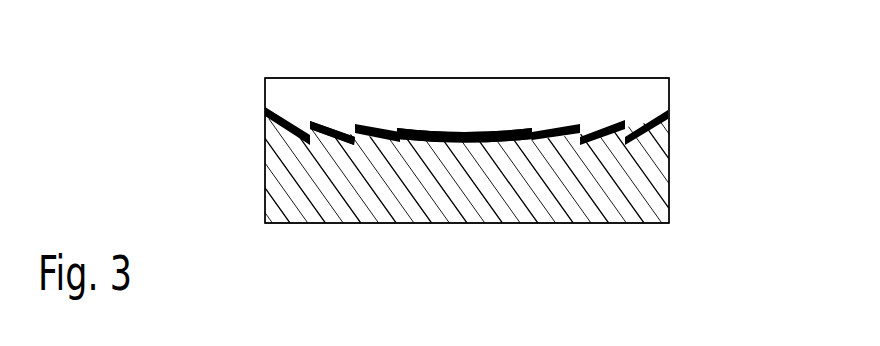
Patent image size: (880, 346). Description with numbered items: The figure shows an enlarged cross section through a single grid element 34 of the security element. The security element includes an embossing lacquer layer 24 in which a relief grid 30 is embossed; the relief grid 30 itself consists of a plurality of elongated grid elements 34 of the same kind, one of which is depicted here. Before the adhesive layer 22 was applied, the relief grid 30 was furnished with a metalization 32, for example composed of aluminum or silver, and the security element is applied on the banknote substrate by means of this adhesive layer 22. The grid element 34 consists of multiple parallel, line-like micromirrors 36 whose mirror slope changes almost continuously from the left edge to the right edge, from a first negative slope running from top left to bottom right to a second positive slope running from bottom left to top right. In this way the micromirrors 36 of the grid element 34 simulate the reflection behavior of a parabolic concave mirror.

The grid element 34 is at (200, 77).
The embossing lacquer layer 24 is at (655, 96).
The adhesive layer 22 is at (655, 180).
The metalization 32 is at (555, 127).
The micromirrors 36 is at (330, 121).
The relief grid 30 is at (468, 112).